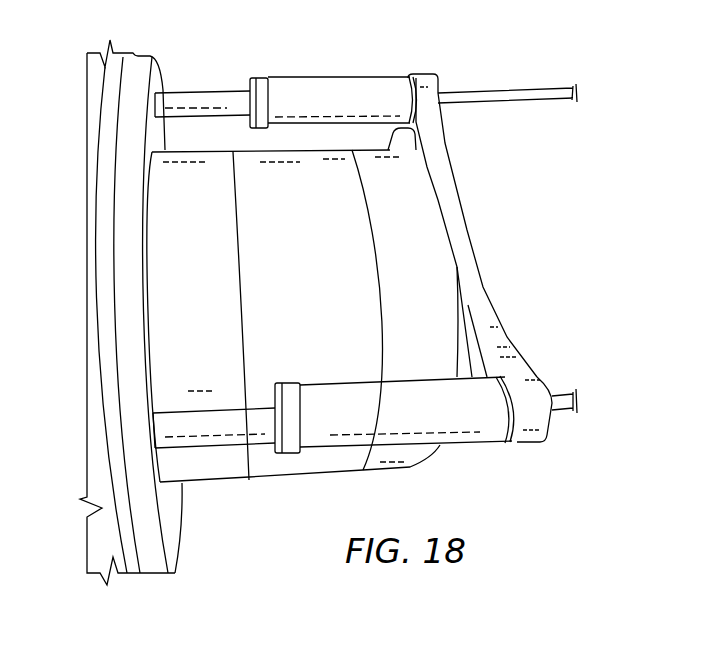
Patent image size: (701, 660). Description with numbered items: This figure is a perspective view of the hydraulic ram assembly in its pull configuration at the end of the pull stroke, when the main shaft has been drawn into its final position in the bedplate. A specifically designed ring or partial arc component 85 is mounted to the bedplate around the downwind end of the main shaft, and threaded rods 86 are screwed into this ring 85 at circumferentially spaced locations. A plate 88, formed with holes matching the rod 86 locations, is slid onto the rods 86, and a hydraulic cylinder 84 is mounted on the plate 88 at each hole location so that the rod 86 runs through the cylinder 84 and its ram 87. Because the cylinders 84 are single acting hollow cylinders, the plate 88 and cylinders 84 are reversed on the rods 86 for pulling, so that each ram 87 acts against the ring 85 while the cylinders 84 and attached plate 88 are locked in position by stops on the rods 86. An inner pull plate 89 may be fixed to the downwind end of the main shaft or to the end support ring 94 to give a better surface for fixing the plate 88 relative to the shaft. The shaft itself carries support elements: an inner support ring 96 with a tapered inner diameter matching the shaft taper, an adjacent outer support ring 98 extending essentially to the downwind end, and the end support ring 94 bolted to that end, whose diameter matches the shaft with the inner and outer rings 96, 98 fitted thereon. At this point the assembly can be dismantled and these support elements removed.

The hydraulic cylinder 84 is at (306, 85).
The ring 85 is at (127, 233).
The rod 86 is at (513, 92).
The ram 87 is at (220, 96).
The plate 88 is at (433, 133).
The inner plate 89 is at (470, 346).
The end support ring 94 is at (408, 287).
The inner support ring 96 is at (183, 287).
The outer support ring 98 is at (298, 287).